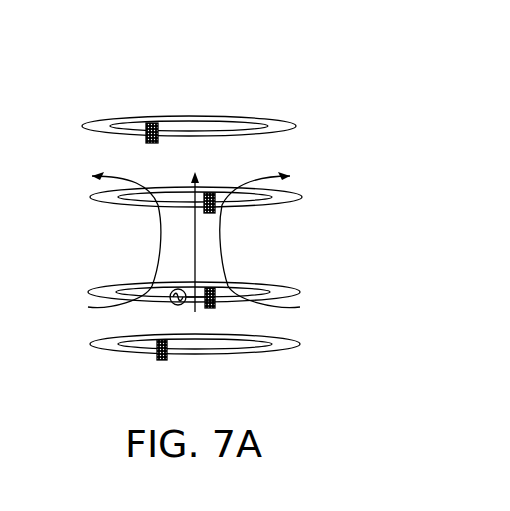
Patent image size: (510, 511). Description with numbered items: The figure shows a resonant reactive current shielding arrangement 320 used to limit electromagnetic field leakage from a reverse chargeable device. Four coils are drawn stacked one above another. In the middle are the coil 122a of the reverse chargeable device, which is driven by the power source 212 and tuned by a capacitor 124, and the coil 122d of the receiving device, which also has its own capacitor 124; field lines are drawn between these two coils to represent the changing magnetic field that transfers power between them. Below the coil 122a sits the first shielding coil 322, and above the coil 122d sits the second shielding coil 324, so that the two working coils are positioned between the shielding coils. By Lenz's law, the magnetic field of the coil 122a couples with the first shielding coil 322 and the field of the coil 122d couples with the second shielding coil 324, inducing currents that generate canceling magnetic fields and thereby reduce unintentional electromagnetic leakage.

The resonant reactive current shielding arrangement 320 is at (318, 68).
The second shielding coil 324 is at (278, 120).
The coil 122d is at (100, 204).
The capacitor 124 is at (222, 212).
The coil 122a is at (90, 291).
The power source 212 is at (171, 304).
The first shielding coil 322 is at (275, 350).